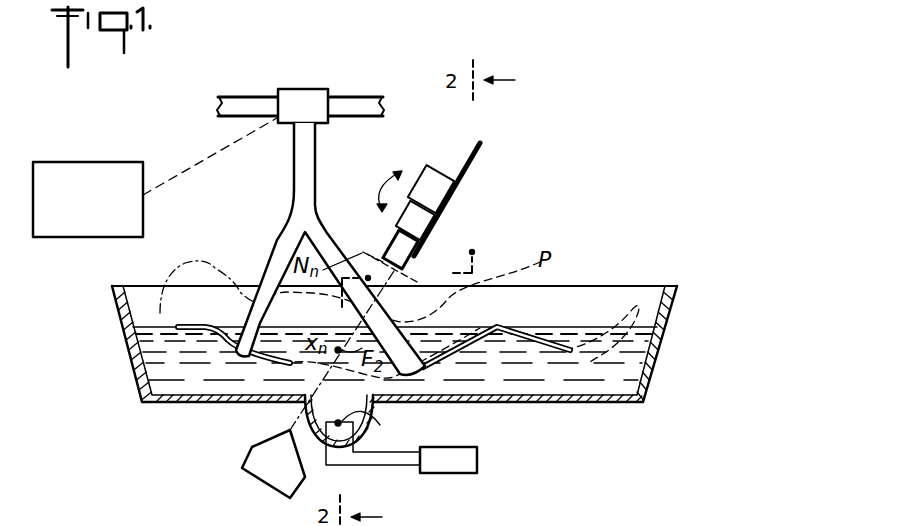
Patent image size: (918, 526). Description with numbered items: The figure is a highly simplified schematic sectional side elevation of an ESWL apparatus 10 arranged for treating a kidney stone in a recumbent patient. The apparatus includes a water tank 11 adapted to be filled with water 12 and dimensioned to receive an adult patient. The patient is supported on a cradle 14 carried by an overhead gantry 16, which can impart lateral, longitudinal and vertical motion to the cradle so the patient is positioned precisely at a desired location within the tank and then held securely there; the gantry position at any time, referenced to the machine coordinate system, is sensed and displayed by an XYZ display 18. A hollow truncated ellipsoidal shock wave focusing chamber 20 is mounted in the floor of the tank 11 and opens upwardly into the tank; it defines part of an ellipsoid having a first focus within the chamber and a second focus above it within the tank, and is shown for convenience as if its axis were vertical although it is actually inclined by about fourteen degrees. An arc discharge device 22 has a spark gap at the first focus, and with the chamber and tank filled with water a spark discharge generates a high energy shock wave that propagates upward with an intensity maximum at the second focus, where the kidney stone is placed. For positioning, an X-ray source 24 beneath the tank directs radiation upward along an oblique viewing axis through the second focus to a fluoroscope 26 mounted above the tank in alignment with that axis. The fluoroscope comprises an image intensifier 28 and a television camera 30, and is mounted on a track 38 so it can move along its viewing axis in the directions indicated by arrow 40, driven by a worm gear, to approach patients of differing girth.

The ESWL apparatus 10 is at (524, 240).
The water tank 11 is at (681, 286).
The water 12 is at (627, 372).
The cradle 14 is at (210, 322).
The overhead gantry 16 is at (297, 90).
The XYZ display 18 is at (82, 161).
The shock wave focusing chamber 20 is at (378, 440).
The arc discharge device 22 is at (458, 455).
The X-ray source 24 is at (251, 450).
The fluoroscope 26 is at (397, 230).
The image intensifier 28 is at (440, 223).
The television camera 30 is at (437, 175).
The track 38 is at (484, 151).
The arrow 40 is at (381, 183).